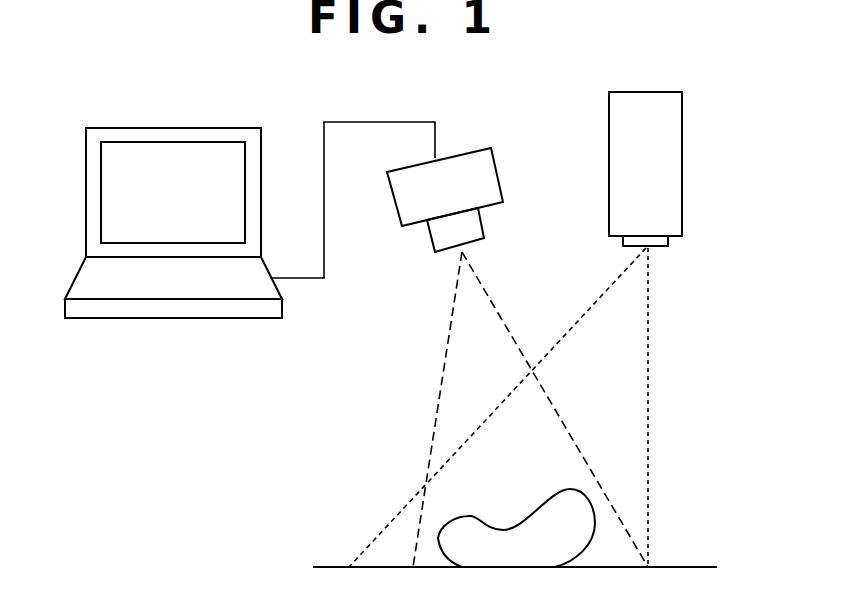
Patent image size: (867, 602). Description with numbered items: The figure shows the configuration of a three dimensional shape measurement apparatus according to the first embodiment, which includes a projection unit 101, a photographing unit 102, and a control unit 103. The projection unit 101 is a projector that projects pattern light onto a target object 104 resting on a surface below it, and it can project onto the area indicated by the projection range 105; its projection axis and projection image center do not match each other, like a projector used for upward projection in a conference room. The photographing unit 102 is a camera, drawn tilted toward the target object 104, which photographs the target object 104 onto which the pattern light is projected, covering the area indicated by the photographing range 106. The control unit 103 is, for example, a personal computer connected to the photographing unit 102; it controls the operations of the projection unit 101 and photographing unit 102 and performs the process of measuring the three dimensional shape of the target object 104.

The projection unit 101 is at (683, 153).
The photographing unit 102 is at (472, 148).
The control unit 103 is at (227, 128).
The target object 104 is at (438, 538).
The projection range 105 is at (638, 369).
The photographing range 106 is at (455, 364).